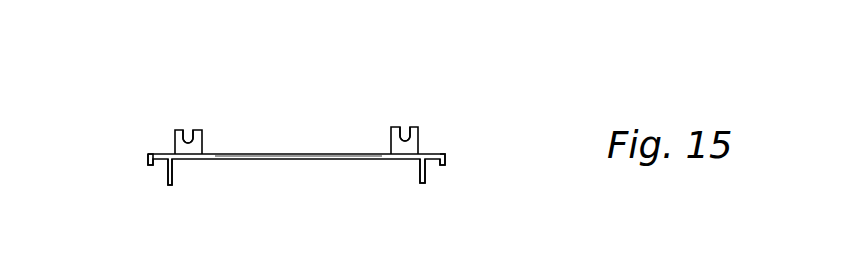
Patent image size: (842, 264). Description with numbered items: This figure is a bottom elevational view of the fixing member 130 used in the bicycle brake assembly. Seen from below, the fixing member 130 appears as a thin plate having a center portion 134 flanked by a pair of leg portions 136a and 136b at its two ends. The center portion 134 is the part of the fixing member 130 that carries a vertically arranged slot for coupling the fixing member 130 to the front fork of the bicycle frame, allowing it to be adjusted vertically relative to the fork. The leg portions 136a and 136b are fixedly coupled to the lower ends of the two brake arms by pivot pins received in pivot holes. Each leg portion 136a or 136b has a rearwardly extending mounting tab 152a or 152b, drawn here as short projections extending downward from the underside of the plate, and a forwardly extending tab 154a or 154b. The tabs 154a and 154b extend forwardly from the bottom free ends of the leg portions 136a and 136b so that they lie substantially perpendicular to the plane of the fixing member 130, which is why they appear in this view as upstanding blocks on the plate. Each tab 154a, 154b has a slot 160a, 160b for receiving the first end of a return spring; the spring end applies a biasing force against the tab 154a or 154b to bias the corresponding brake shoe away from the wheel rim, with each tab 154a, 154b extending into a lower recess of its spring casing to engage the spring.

The fixing member 130 is at (320, 128).
The center portion 134 is at (310, 153).
The leg portion 136a is at (162, 153).
The second leg portion 136b is at (427, 153).
The mounting tab 152a is at (167, 173).
The mounting tab 152b is at (428, 177).
The forwardly extending tab 154a is at (211, 107).
The forwardly extending tab 154b is at (358, 86).
The slot 160a is at (191, 140).
The slot 160b is at (405, 139).